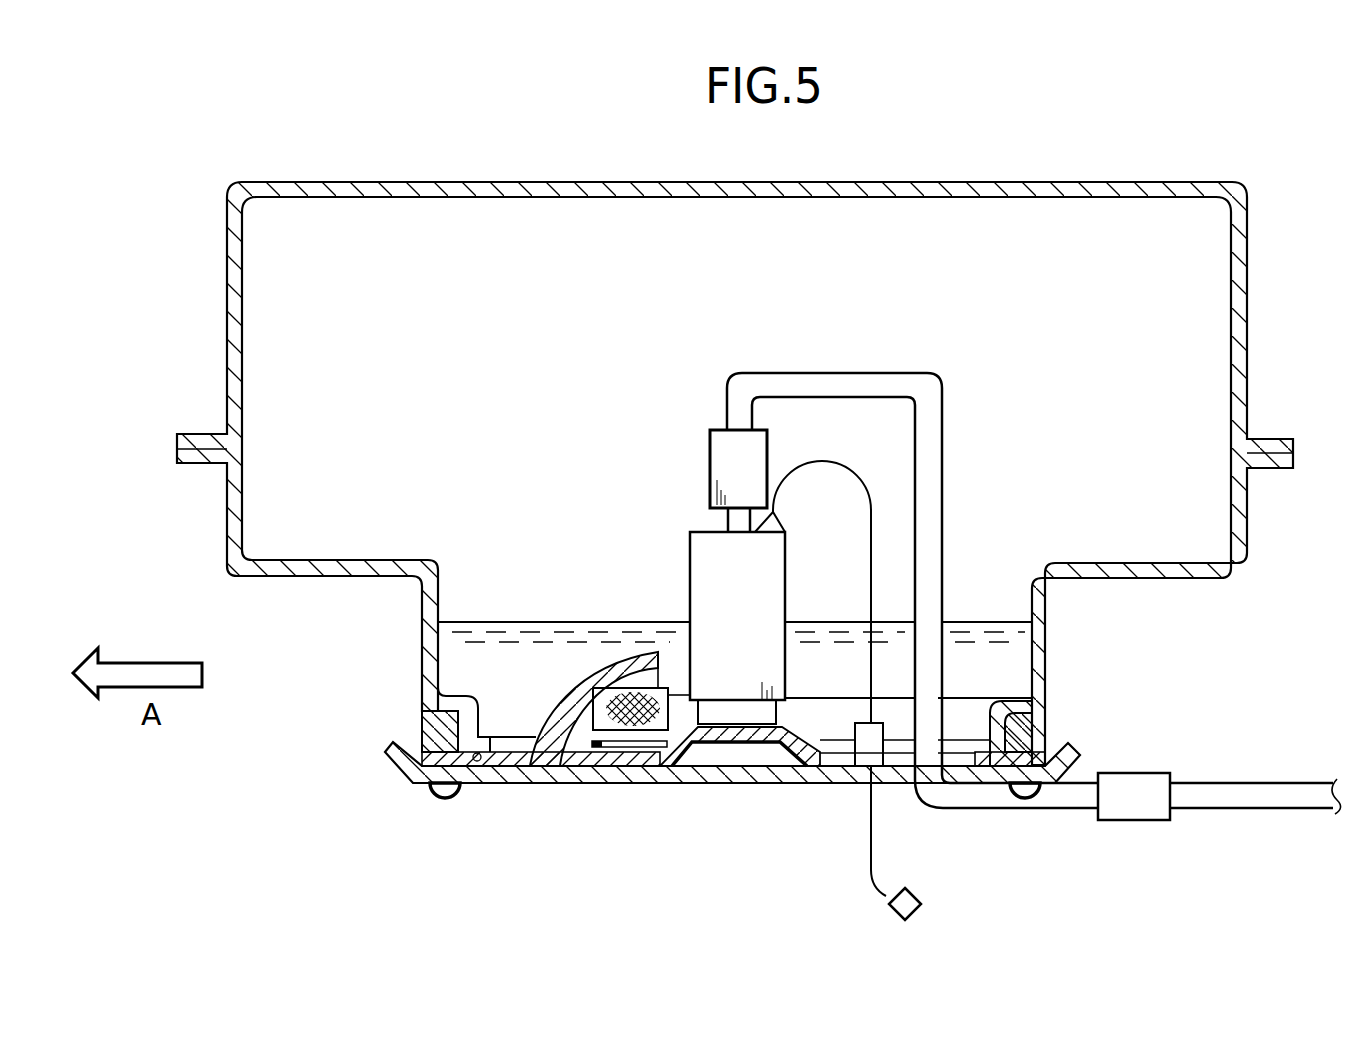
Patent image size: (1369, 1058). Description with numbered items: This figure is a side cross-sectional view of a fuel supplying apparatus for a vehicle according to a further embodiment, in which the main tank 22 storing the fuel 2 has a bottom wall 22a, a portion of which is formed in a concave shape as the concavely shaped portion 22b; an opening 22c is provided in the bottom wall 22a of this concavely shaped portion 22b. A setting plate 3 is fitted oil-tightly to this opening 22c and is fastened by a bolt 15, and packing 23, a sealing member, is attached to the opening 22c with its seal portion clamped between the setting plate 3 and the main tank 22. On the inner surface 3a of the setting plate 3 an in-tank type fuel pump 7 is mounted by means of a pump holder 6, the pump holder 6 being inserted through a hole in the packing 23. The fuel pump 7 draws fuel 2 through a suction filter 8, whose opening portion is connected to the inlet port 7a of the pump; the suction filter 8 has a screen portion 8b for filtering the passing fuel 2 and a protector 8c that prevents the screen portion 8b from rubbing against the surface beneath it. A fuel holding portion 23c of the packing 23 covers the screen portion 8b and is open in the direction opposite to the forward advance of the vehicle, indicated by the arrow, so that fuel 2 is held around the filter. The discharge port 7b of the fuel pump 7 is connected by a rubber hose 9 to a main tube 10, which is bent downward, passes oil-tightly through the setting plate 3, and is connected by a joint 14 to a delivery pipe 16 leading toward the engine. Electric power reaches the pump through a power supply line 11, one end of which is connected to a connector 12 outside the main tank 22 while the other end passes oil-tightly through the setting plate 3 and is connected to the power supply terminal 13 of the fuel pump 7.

The fuel 2 is at (985, 622).
The setting plate 3 is at (560, 775).
The inner surface of the setting plate 3a is at (518, 751).
The pump holder 6 is at (730, 728).
The fuel pump 7 is at (690, 553).
The inlet port 7a is at (760, 714).
The discharge port 7b is at (728, 518).
The suction filter 8 is at (640, 712).
The screen portion 8b is at (638, 732).
The protector 8c is at (600, 749).
The rubber hose 9 is at (710, 447).
The main tube 10 is at (727, 393).
The power supply line 11 is at (871, 826).
The connector 12 is at (921, 902).
The power supply terminal 13 is at (775, 516).
The joint 14 is at (1132, 810).
The bolt 15 is at (445, 799).
The delivery pipe 16 is at (1245, 800).
The main tank 22 is at (1247, 213).
The bottom wall 22a is at (1185, 566).
The concavely shaped portion 22b is at (1045, 659).
The opening 22c is at (958, 748).
The packing 23 is at (477, 761).
The fuel holding portion 23c is at (570, 665).